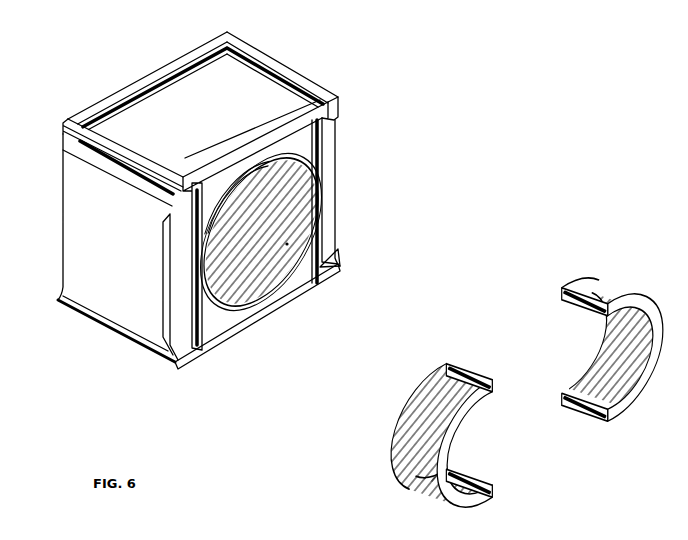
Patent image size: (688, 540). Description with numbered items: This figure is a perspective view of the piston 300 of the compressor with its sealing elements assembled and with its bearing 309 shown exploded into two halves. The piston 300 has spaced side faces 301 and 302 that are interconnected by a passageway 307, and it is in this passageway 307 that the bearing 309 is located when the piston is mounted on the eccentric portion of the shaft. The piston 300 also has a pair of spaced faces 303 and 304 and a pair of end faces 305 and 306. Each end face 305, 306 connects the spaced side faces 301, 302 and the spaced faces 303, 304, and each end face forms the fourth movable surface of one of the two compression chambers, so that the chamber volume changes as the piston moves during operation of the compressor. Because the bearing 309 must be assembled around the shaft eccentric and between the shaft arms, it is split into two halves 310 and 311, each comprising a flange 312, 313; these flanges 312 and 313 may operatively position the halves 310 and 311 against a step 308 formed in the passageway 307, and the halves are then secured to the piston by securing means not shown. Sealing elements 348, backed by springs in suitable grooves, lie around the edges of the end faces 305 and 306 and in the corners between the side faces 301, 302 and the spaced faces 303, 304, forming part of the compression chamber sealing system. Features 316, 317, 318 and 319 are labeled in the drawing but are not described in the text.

The piston 300 is at (272, 57).
The spaced side face 301 is at (64, 126).
The spaced side face 302 is at (325, 252).
The spaced face 303 is at (212, 120).
The spaced face 304 is at (178, 365).
The end face 305 is at (128, 259).
The end face 306 is at (338, 170).
The passageway 307 is at (276, 272).
The step 308 is at (236, 296).
The bearing 309 is at (580, 300).
The bearing half 310 is at (401, 448).
The bearing half 311 is at (600, 284).
The flange 312 is at (493, 488).
The flange 313 is at (606, 425).
The top side rail 316 is at (136, 87).
The corner cap 317 is at (341, 100).
The lower corner bracket 318 is at (320, 288).
The lower left corner 319 is at (58, 302).
The sealing element 348 is at (300, 82).